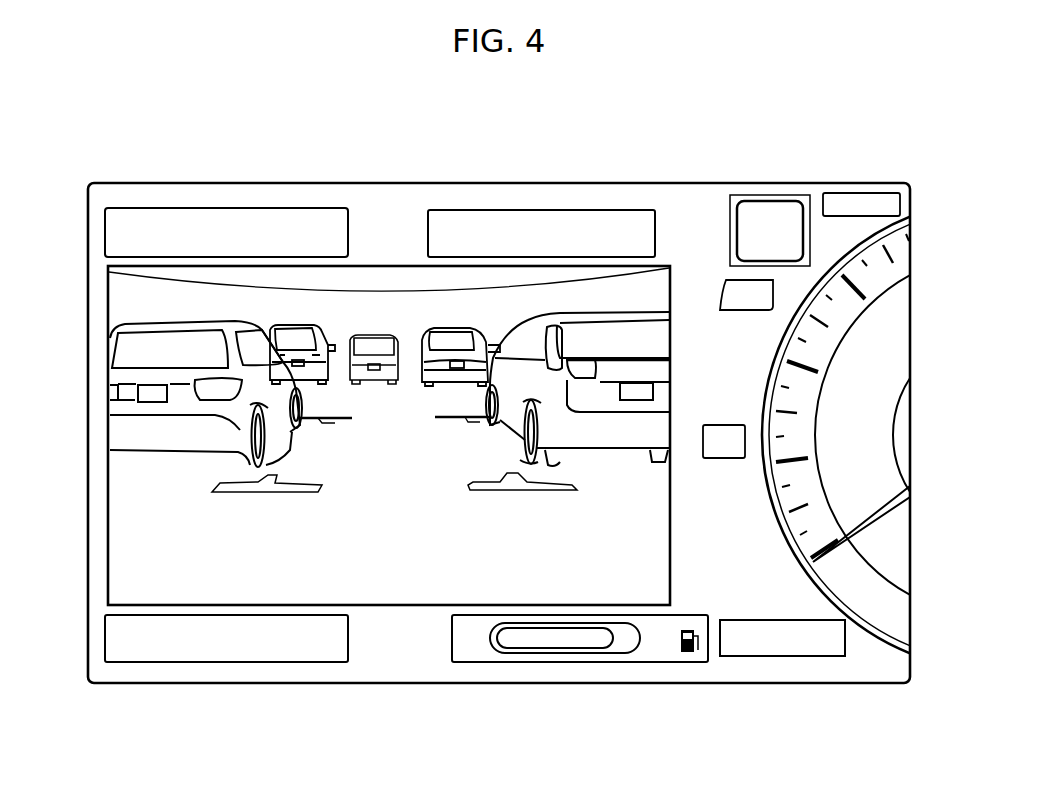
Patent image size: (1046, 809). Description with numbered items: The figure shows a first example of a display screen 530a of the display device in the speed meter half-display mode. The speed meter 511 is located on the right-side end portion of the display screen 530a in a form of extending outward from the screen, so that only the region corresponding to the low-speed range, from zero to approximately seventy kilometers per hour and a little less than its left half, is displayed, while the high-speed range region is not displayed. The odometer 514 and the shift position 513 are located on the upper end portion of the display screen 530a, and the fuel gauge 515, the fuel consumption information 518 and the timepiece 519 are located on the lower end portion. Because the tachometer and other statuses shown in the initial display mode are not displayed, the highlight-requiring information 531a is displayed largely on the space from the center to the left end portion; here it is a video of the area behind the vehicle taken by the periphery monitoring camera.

The display screen 530a is at (705, 183).
The highlight-requiring information 531a is at (375, 265).
The odometer 514 is at (528, 210).
The shift position 513 is at (790, 200).
The speed meter 511 is at (872, 640).
The fuel consumption information 518 is at (240, 663).
The fuel gauge 515 is at (550, 663).
The timepiece 519 is at (762, 660).